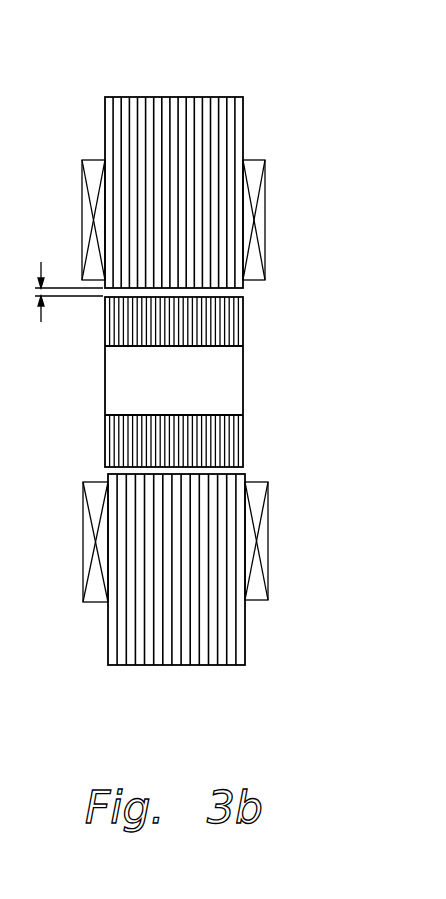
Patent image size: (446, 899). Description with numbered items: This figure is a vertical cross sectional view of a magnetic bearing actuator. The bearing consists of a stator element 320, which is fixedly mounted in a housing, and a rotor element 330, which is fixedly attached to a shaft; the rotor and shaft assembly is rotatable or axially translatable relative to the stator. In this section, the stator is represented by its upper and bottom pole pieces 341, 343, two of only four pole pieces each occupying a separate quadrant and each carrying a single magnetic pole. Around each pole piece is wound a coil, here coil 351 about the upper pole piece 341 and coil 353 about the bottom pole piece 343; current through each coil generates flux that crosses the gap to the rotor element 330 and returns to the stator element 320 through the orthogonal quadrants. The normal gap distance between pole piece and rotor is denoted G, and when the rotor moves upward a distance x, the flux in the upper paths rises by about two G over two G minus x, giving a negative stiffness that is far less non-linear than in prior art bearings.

The stator element 320 is at (177, 97).
The pole piece 341 is at (202, 221).
The coil 351 is at (265, 232).
The rotor element 330 is at (243, 325).
The pole piece 343 is at (188, 542).
The coil 353 is at (267, 542).
The normal gap distance G is at (61, 292).